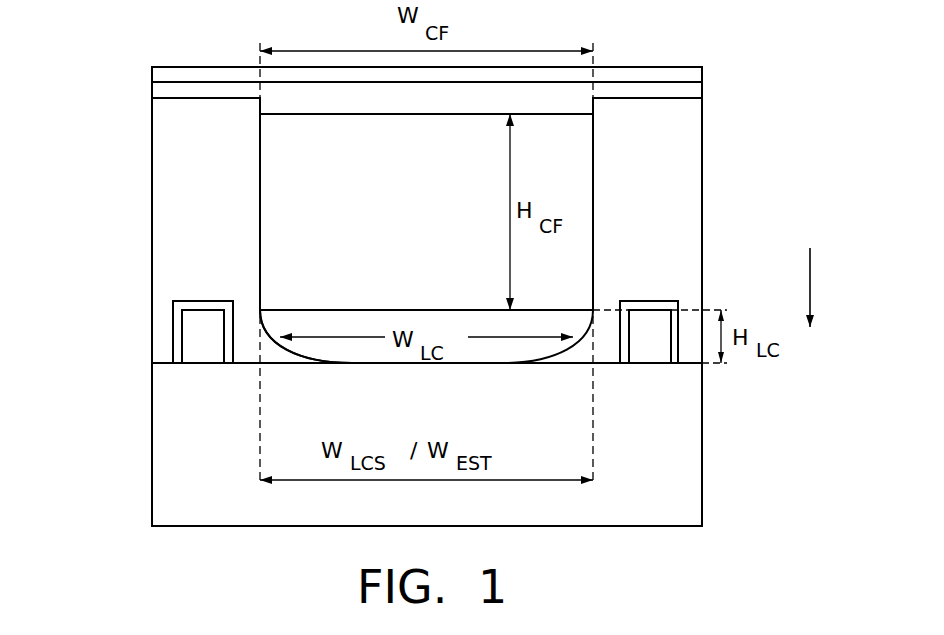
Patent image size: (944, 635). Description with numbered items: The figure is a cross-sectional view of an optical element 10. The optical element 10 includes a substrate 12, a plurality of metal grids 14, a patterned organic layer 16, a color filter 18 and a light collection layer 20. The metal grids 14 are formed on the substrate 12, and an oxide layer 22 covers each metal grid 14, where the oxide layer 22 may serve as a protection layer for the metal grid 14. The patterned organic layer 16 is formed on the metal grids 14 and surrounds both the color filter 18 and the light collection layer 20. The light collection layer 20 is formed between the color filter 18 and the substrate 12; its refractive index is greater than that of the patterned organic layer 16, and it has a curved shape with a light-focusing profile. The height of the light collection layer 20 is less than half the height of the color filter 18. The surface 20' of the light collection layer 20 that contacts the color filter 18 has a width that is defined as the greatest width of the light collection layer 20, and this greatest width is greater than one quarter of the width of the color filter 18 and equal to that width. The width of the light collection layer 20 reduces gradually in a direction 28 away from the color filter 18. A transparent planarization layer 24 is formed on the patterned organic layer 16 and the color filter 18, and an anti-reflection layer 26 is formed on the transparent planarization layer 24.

The optical element 10 is at (88, 52).
The substrate 12 is at (667, 507).
The metal grids 14 is at (203, 353).
The patterned organic layer 16 is at (162, 175).
The color filter 18 is at (443, 223).
The light collection layer 20 is at (426, 364).
The surface 20' is at (323, 307).
The oxide layer 22 is at (205, 306).
The transparent planarization layer 24 is at (692, 89).
The anti-reflection layer 26 is at (692, 76).
The direction 28 is at (830, 287).